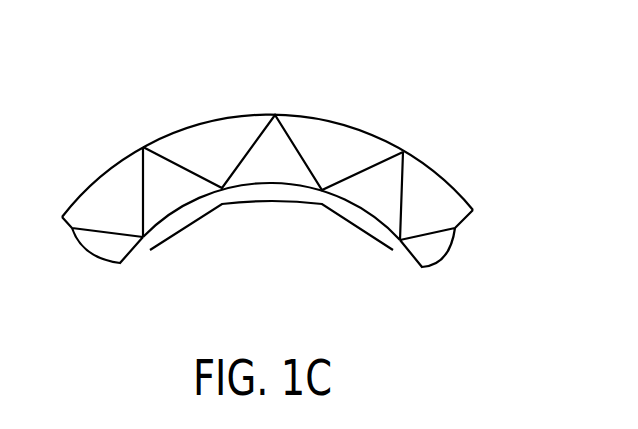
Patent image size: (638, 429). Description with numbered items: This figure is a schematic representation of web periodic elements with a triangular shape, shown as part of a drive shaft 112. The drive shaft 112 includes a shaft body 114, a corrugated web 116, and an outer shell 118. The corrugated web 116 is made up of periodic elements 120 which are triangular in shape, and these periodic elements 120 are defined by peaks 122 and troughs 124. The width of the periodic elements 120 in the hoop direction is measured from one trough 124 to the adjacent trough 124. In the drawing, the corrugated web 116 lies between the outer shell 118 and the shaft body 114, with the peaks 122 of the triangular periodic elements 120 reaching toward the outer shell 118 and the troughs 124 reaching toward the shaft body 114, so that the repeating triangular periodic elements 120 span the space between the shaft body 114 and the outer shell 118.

The drive shaft 112 is at (400, 70).
The shaft body 114 is at (226, 193).
The corrugated web 116 is at (240, 168).
The outer shell 118 is at (235, 113).
The periodic elements 120 is at (196, 224).
The peaks 122 is at (147, 141).
The troughs 124 is at (143, 237).